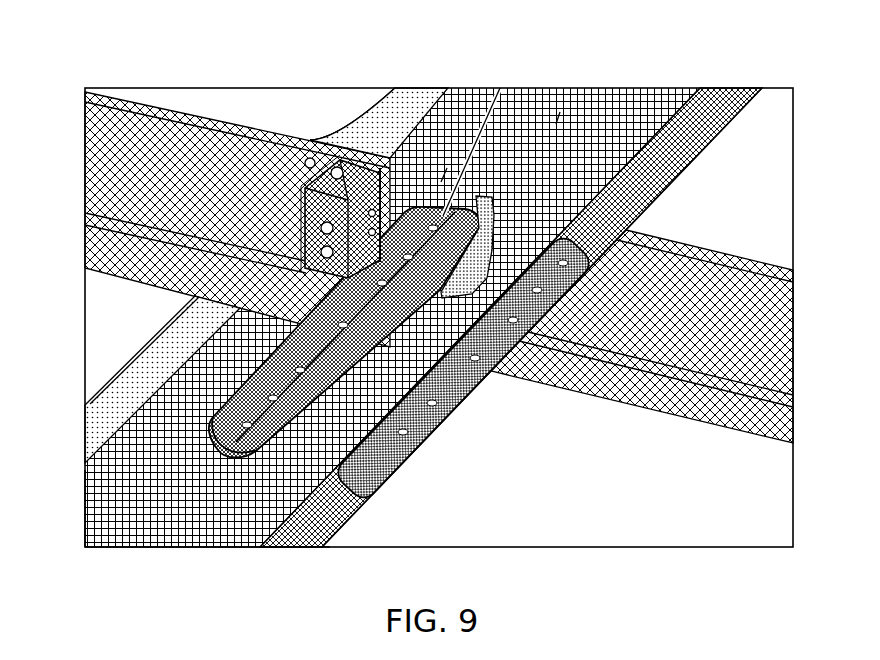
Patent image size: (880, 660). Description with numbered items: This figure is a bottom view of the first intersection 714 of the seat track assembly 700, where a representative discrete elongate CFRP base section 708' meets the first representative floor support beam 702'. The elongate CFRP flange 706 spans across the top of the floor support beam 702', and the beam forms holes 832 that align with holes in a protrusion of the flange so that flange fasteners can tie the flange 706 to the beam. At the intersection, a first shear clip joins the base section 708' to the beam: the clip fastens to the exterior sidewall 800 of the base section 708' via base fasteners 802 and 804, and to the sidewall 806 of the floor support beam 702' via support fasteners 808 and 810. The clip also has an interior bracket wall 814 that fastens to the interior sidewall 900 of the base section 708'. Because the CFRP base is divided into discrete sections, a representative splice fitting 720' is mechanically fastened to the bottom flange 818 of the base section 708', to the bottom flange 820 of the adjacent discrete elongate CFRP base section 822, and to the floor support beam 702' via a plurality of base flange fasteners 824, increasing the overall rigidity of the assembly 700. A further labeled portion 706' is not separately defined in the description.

The seat track assembly 700 is at (193, 74).
The first intersection 714 is at (333, 103).
The elongate CFRP flange 706 is at (379, 96).
The representative discrete elongate CFRP base section 708' is at (476, 121).
The sidewall 800 is at (345, 280).
The base fastener 802 is at (381, 168).
The base fastener 804 is at (382, 213).
The base flange fasteners 824 is at (446, 173).
The bottom flange 818 is at (560, 118).
The interior sidewall 900 is at (392, 317).
The wall panel strip 706' is at (511, 317).
The interior bracket wall 814 is at (481, 236).
The holes 832 is at (292, 158).
The sidewall 806 is at (181, 189).
The support fastener 808 is at (305, 214).
The support fastener 810 is at (315, 243).
The first representative floor support beam 702' is at (195, 338).
The adjacent discrete elongate CFRP base section 822 is at (108, 488).
The representative splice fitting 720' is at (249, 455).
The bottom flange 820 is at (151, 527).